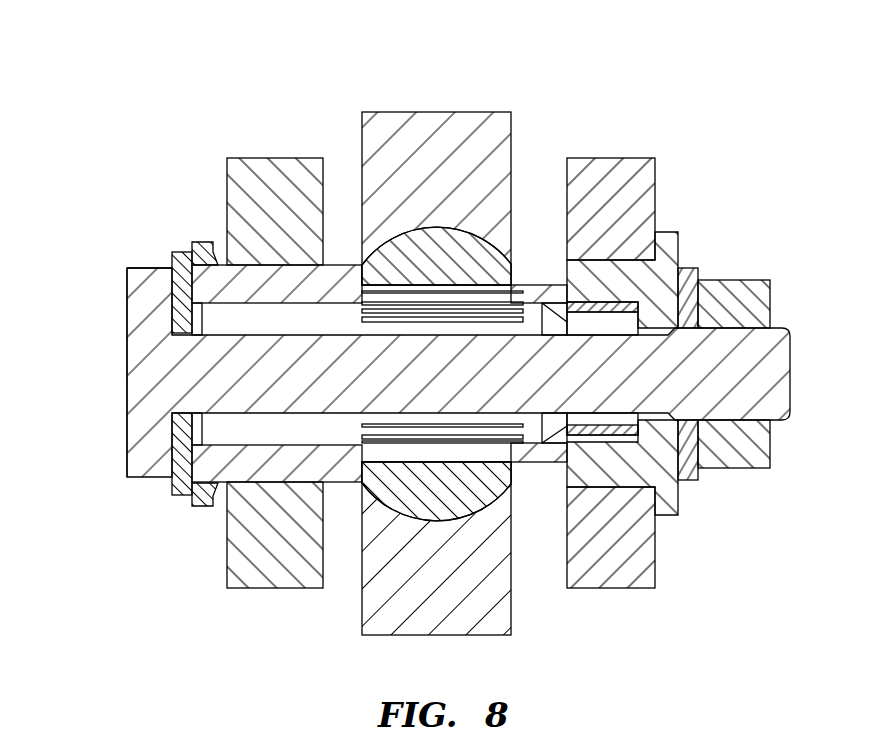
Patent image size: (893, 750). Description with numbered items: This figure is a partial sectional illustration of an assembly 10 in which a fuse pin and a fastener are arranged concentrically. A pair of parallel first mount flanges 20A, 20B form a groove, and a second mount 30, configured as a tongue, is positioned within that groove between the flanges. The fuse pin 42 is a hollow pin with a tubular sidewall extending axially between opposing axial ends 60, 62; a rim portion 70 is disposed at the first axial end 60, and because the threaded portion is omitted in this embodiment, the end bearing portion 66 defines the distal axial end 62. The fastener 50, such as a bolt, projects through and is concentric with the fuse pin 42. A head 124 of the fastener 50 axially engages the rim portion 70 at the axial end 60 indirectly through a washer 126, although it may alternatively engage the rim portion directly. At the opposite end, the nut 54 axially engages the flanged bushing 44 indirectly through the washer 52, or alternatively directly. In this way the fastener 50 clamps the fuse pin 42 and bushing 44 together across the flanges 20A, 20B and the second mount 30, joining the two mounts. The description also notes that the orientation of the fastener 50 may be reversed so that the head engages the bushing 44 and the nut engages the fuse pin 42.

The fixation assembly 10 is at (695, 85).
The first mount flange 20A is at (270, 158).
The first mount flange 20B is at (613, 158).
The second mount 30 is at (437, 112).
The fuse pin 42 is at (202, 503).
The flanged bushing 44 is at (668, 233).
The fastener 50 is at (150, 477).
The washer 52 is at (695, 265).
The nut 54 is at (748, 280).
The axial end 60 is at (128, 300).
The axial end 62 is at (645, 316).
The end bearing portion 66 is at (609, 432).
The rim portion 70 is at (200, 242).
The head 124 is at (127, 440).
The washer 126 is at (178, 495).